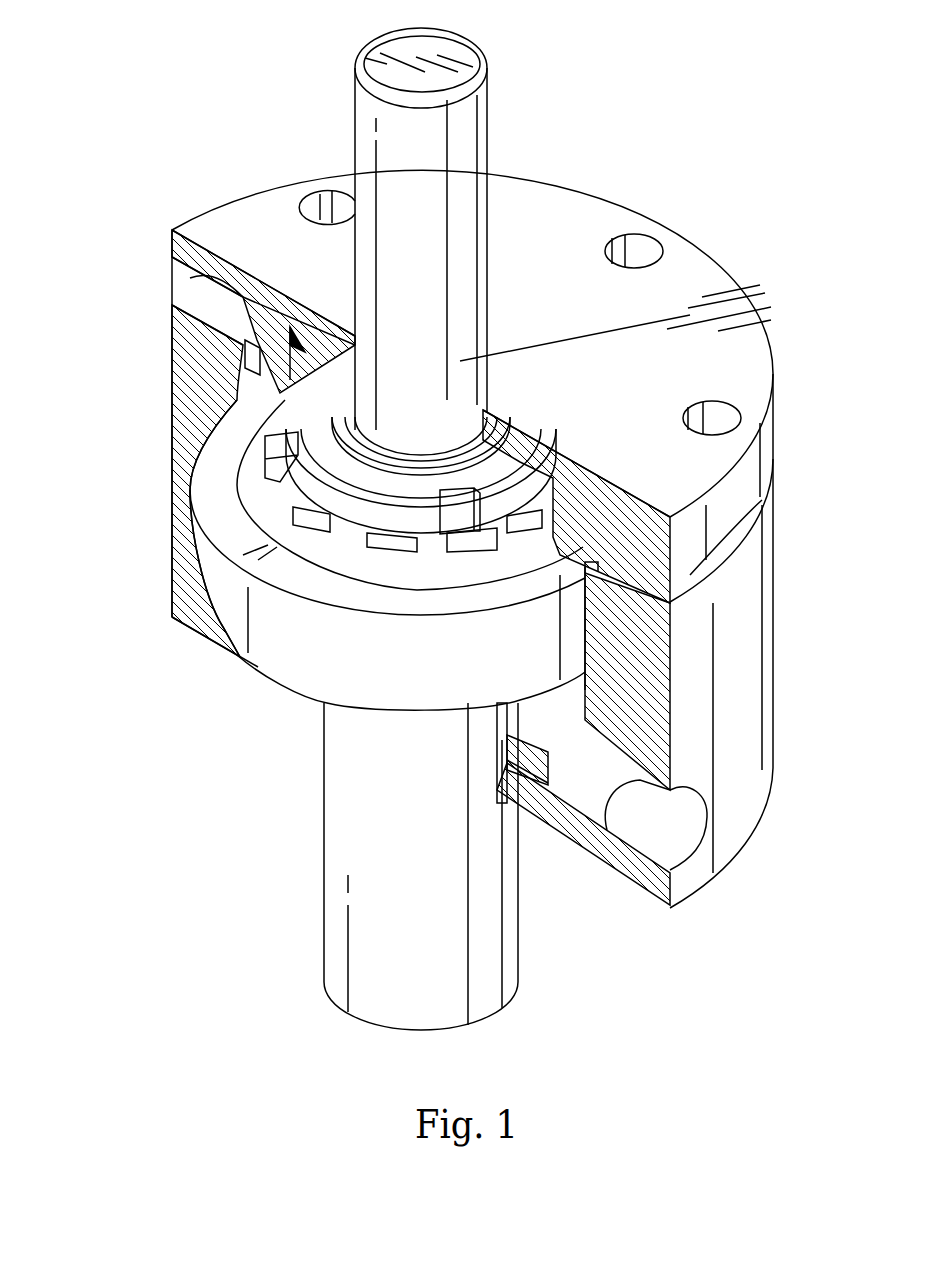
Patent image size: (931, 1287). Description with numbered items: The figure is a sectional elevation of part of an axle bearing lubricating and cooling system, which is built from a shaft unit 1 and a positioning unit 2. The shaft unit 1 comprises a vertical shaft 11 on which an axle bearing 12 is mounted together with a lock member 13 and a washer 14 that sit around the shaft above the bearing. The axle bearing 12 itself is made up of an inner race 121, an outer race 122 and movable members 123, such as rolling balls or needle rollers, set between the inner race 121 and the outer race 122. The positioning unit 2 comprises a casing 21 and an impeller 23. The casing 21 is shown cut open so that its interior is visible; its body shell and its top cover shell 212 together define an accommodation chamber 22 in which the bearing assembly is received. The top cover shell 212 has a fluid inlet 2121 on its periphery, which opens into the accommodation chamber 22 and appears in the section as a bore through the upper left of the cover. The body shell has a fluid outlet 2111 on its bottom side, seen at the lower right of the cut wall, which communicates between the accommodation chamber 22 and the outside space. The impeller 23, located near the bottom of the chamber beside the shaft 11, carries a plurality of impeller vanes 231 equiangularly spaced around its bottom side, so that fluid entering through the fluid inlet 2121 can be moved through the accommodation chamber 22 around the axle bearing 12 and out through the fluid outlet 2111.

The shaft unit 1 is at (353, 119).
The shaft 11 is at (342, 770).
The axle bearing 12 is at (327, 558).
The inner race 121 is at (190, 618).
The outer race 122 is at (223, 622).
The movable members 123 is at (337, 542).
The lock member 13 is at (300, 416).
The washer 14 is at (280, 473).
The positioning unit 2 is at (211, 201).
The casing 21 is at (169, 396).
The fluid outlet 2111 is at (677, 843).
The top cover shell 212 is at (172, 234).
The fluid inlet 2121 is at (187, 298).
The accommodation chamber 22 is at (233, 293).
The impeller 23 is at (516, 726).
The impeller vanes 231 is at (507, 803).